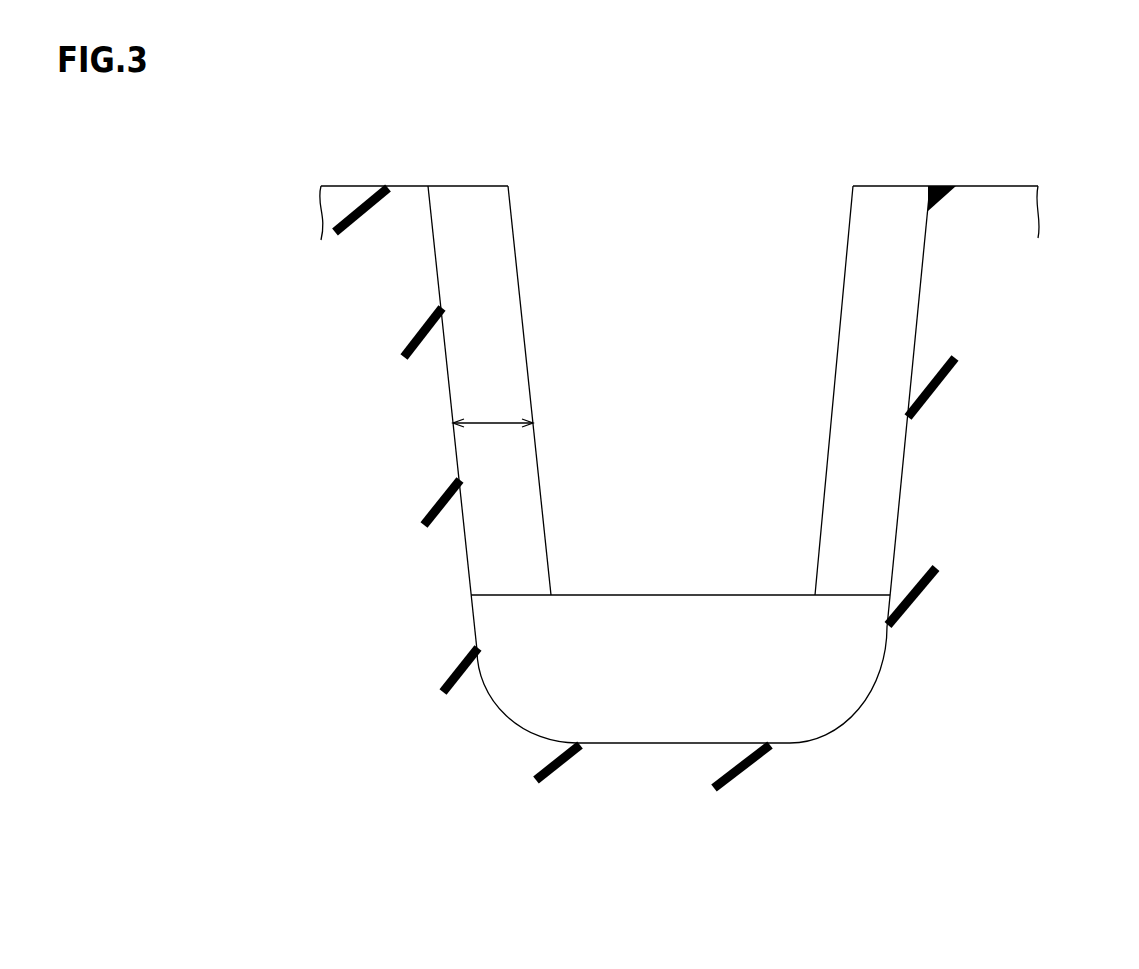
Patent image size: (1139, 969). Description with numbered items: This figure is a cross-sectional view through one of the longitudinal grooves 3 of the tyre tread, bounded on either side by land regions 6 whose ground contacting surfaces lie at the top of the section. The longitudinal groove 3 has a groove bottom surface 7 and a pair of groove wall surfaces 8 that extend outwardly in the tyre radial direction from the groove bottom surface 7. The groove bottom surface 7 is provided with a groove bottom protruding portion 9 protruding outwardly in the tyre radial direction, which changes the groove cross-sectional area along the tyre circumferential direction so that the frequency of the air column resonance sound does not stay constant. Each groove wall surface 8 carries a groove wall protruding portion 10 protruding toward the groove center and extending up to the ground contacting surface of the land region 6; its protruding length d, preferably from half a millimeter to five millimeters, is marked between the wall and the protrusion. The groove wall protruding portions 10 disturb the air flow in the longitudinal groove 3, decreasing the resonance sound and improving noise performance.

The longitudinal groove 3 is at (675, 243).
The land region 6 is at (385, 187).
The groove bottom surface 7 is at (600, 747).
The groove wall surface 8 is at (458, 484).
The groove bottom protruding portion 9 is at (800, 703).
The groove wall protruding portion 10 is at (482, 333).
The protruding length d is at (490, 422).